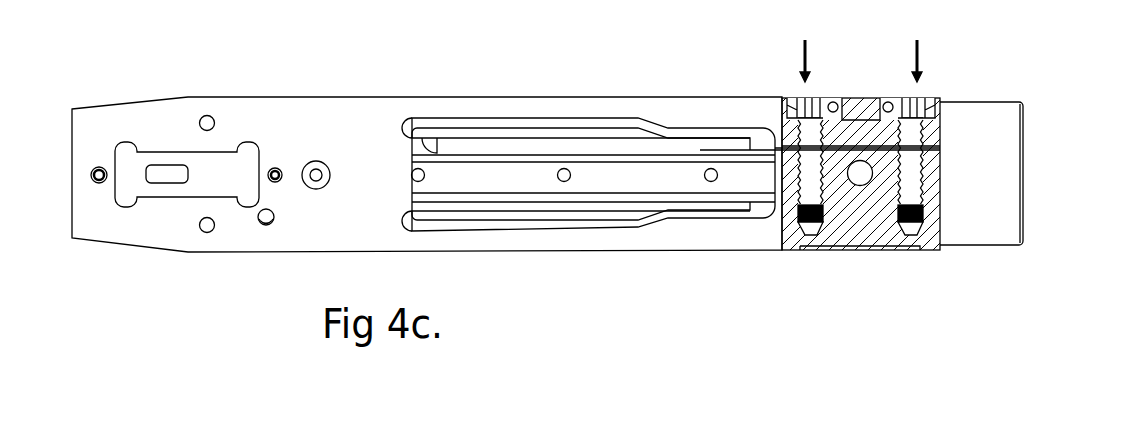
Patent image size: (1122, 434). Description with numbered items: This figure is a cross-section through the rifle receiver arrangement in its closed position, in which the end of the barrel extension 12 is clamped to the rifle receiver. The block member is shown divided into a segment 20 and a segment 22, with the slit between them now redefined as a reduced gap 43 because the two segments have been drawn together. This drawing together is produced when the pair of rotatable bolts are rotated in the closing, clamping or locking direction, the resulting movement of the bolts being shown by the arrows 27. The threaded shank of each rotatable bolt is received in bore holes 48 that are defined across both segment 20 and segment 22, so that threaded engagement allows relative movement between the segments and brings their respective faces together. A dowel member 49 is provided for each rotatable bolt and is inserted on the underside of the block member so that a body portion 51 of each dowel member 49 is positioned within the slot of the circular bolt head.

The barrel extension 12 is at (970, 118).
The segment 20 is at (773, 98).
The segment 22 is at (790, 153).
The arrows 27 is at (800, 48).
The reduced gap 43 is at (940, 147).
The bore holes 48 is at (800, 185).
The dowel member 49 is at (861, 125).
The body portion 51 is at (829, 102).